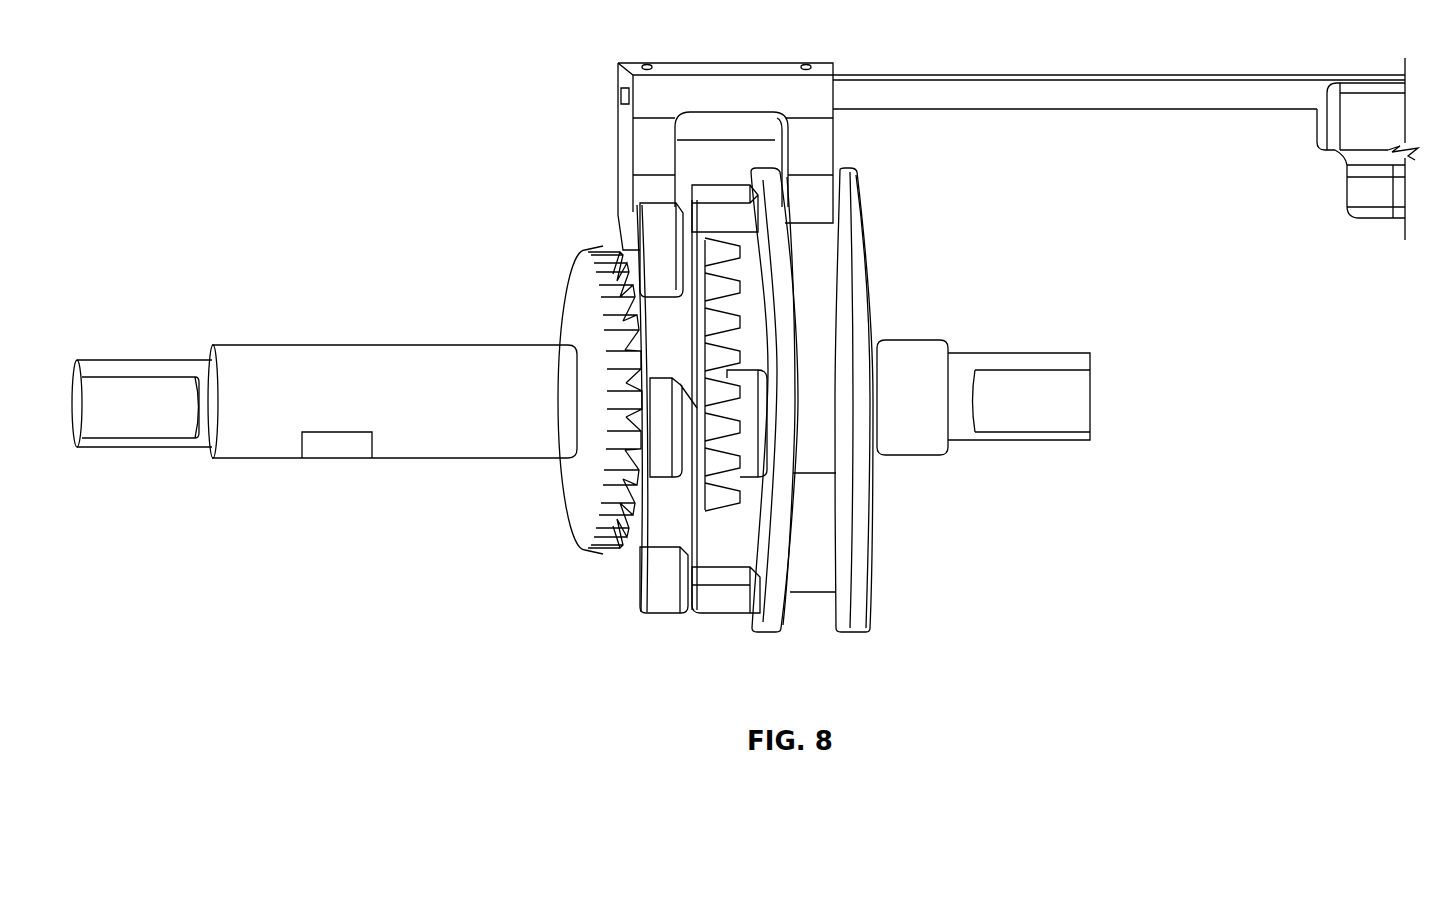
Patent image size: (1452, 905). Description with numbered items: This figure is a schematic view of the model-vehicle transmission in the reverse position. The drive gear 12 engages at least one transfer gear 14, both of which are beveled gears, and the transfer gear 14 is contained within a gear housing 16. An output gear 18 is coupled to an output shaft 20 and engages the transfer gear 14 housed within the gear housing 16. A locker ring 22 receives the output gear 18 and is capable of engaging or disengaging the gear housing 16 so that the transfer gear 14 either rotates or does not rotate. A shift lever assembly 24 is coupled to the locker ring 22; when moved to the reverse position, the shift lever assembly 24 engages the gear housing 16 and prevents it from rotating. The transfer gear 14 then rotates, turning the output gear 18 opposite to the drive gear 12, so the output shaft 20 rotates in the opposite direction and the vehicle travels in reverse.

The drive gear 12 is at (381, 366).
The transfer gear 14 is at (580, 546).
The gear housing 16 is at (655, 601).
The output gear 18 is at (743, 440).
The output shaft 20 is at (115, 385).
The locker ring 22 is at (870, 215).
The shift lever assembly 24 is at (916, 75).